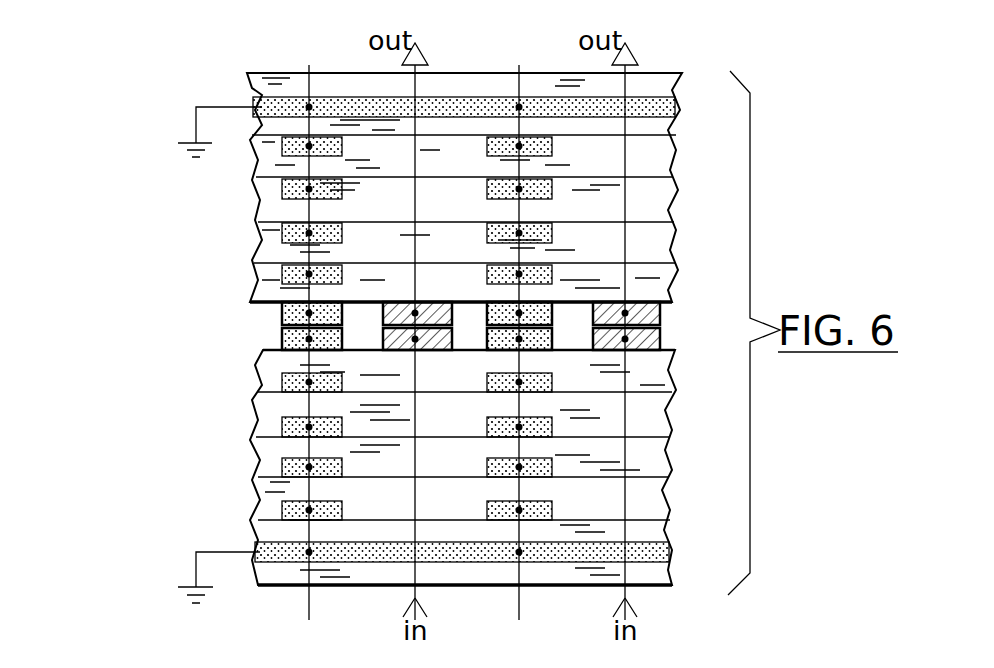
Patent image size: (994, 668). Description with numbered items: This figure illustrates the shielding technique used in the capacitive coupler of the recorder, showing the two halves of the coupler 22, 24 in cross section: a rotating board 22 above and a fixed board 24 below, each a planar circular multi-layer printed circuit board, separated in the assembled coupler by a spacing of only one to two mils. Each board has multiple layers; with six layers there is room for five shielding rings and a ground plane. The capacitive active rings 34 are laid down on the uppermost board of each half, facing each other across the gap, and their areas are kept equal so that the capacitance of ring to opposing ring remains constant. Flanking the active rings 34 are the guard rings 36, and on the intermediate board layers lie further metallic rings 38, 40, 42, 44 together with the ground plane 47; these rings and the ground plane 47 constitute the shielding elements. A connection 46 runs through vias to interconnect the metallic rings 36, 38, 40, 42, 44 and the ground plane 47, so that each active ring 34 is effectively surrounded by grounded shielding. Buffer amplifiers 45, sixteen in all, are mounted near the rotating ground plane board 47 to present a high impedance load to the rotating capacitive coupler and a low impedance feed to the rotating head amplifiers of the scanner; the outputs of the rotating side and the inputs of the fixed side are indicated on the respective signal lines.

The rotating coupler board 22 is at (178, 75).
The fixed coupler board 24 is at (178, 333).
The active ring 34 is at (400, 302).
The guard ring 36 is at (282, 312).
The metallic shielding ring 38 is at (552, 273).
The metallic shielding ring 40 is at (552, 230).
The metallic shielding ring 42 is at (552, 188).
The metallic shielding ring 44 is at (552, 143).
The buffer amplifier 45 is at (425, 55).
The connection 46 is at (519, 168).
The ground plane 47 is at (357, 108).